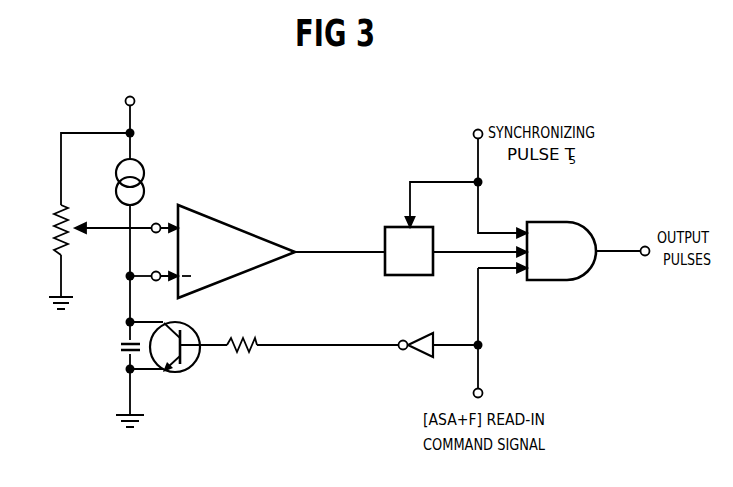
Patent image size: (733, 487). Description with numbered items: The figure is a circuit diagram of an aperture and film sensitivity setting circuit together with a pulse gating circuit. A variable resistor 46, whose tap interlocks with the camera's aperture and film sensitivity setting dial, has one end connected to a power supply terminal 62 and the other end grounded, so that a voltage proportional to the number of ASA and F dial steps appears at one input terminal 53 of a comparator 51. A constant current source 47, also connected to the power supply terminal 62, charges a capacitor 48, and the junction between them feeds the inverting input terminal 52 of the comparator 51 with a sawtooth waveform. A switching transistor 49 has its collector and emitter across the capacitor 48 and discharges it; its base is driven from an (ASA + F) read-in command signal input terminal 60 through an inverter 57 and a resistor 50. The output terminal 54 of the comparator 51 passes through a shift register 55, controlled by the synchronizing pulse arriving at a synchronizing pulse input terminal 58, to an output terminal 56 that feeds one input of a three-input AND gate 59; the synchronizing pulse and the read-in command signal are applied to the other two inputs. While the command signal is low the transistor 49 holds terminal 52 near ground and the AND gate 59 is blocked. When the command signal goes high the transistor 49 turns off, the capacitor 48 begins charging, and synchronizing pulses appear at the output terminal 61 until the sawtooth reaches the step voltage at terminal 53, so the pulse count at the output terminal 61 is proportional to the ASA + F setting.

The variable resistor 46 is at (63, 226).
The constant current source 47 is at (141, 165).
The capacitor 48 is at (121, 344).
The switching transistor 49 is at (172, 374).
The resistor 50 is at (247, 336).
The comparator 51 is at (242, 227).
The inverting input terminal 52 is at (156, 271).
The input terminal 53 is at (156, 223).
The output terminal 54 is at (327, 251).
The shift register 55 is at (388, 227).
The output terminal 56 is at (466, 250).
The inverter 57 is at (416, 359).
The synchronizing pulse input terminal 58 is at (481, 129).
The 3-input AND gate 59 is at (555, 222).
The (ASA + F) read-in command signal input terminal 60 is at (482, 389).
The output terminal 61 is at (641, 248).
The power supply terminal 62 is at (134, 97).